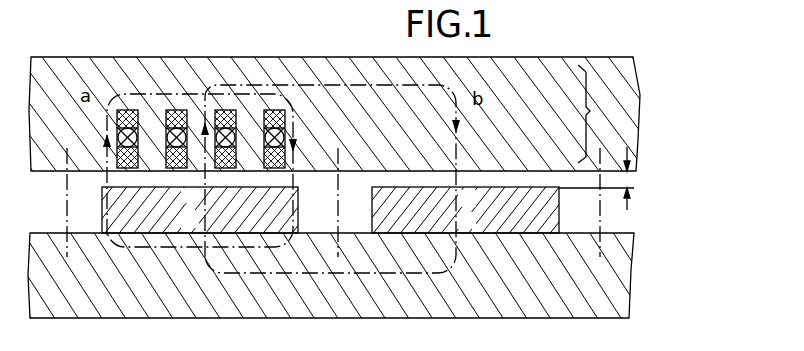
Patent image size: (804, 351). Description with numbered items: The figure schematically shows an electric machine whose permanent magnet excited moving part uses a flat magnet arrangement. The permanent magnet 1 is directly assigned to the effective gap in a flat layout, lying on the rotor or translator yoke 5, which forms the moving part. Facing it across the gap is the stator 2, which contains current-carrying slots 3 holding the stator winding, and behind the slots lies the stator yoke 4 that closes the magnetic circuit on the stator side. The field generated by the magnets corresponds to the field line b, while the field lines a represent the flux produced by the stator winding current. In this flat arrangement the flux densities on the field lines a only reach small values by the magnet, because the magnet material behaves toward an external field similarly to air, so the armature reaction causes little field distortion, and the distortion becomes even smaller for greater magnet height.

The permanent magnet 1 is at (258, 218).
The stator 2 is at (591, 110).
The current-carrying slots 3 is at (137, 114).
The stator yoke 4 is at (135, 76).
The rotor or translator yoke 5 is at (248, 306).